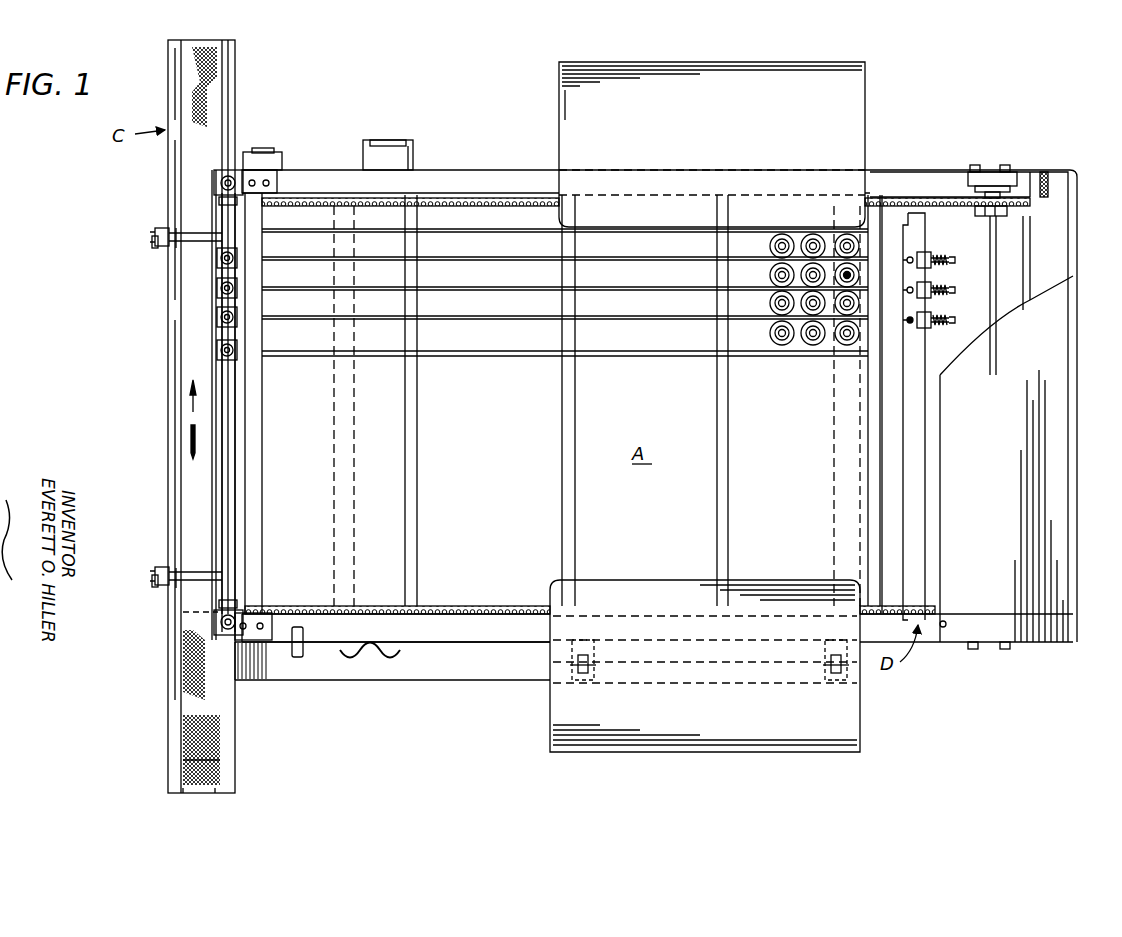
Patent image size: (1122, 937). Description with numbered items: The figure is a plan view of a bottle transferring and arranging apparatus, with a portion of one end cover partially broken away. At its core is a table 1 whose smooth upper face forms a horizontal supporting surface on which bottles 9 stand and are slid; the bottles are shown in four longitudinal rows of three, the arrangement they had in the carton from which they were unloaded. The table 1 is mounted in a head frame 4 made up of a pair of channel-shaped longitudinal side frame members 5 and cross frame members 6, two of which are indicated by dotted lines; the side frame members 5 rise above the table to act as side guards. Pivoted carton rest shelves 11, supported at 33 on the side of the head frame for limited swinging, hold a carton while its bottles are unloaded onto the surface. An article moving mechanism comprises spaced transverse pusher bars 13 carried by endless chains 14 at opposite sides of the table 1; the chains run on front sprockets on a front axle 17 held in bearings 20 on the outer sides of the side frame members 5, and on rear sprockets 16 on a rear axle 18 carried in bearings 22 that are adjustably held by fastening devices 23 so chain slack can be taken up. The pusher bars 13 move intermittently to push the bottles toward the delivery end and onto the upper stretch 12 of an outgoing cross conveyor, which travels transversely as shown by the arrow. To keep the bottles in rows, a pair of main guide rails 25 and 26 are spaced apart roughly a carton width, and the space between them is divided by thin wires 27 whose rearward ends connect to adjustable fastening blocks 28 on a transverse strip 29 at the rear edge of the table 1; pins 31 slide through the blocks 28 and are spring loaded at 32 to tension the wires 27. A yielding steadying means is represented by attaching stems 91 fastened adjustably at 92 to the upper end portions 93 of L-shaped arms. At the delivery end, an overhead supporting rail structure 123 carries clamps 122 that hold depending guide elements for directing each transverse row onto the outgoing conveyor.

The table 1 is at (470, 486).
The head frame 4 is at (440, 170).
The longitudinal side frame members 5 is at (905, 192).
The cross frame members 6 is at (340, 420).
The bottles 9 is at (847, 345).
The pivoted carton rest shelves 11 is at (732, 122).
The upper stretch of outgoing cross conveyor 12 is at (188, 530).
The transverse pusher bars 13 is at (262, 377).
The endless chains 14 is at (480, 198).
The rear sprockets 16 is at (1010, 212).
The front axle 17 is at (262, 150).
The rear axle 18 is at (990, 240).
The bearings for front axle 20 is at (270, 170).
The rear axle bearings 22 is at (1015, 172).
The fastening devices 23 is at (1006, 165).
The main guide rail 25 is at (555, 228).
The main guide rail 26 is at (470, 352).
The wires 27 is at (520, 262).
The adjustable fastening blocks 28 is at (930, 268).
The transverse strip 29 is at (922, 396).
The pins 31 is at (940, 300).
The spring loading 32 is at (930, 328).
The shelf support 33 is at (820, 672).
The attaching stems 91 is at (192, 225).
The adjustable fastening 92 is at (155, 234).
The upper end portions of arms 93 is at (158, 248).
The clamps 122 is at (216, 292).
The overhead supporting rail structure 123 is at (212, 486).